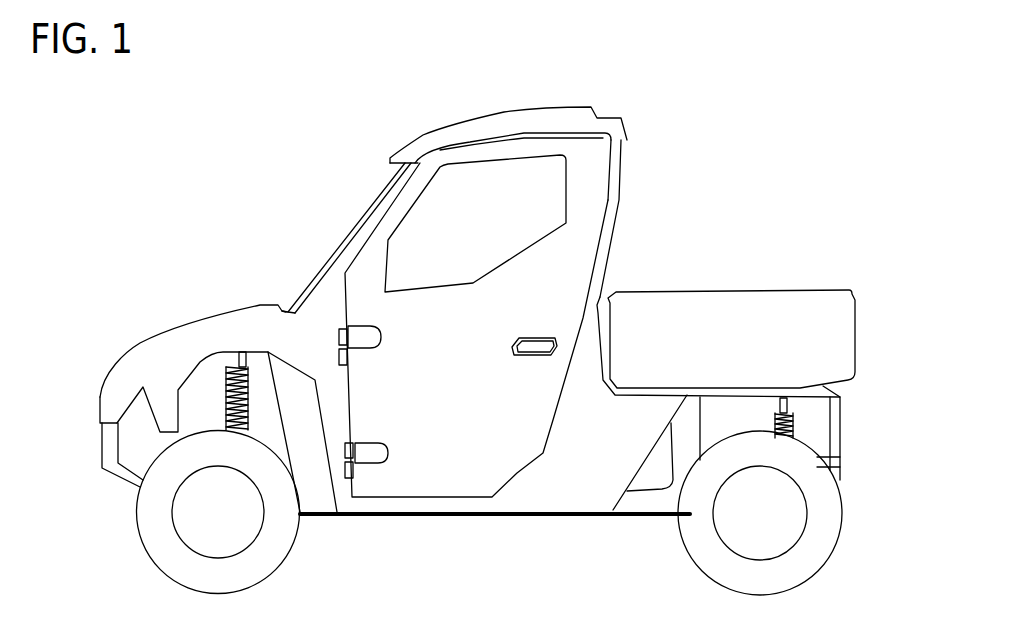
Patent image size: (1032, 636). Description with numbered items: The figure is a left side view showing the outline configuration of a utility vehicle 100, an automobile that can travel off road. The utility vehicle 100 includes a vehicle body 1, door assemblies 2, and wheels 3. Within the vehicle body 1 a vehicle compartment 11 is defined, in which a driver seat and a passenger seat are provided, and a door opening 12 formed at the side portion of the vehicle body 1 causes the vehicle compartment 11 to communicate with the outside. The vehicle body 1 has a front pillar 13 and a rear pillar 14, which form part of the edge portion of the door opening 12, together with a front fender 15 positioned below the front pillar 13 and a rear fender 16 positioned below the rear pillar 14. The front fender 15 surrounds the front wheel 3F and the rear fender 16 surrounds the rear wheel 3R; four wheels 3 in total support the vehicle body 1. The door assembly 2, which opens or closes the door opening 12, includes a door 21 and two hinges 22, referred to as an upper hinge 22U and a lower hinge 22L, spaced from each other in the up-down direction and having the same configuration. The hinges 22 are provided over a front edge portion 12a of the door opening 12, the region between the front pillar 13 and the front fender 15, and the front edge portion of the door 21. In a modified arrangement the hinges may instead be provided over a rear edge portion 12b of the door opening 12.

The utility vehicle 100 is at (257, 147).
The vehicle body 1 is at (523, 108).
The door assembly 2 is at (515, 478).
The wheels 3 is at (485, 524).
The front wheel 3F is at (148, 555).
The rear wheel 3R is at (820, 570).
The vehicle compartment 11 is at (423, 217).
The door opening 12 is at (605, 280).
The front edge portion of the door opening 12a is at (343, 393).
The rear edge portion of the door opening 12b is at (577, 420).
The front pillar 13 is at (352, 240).
The rear pillar 14 is at (614, 208).
The front fender 15 is at (285, 351).
The rear fender 16 is at (620, 447).
The door 21 is at (611, 177).
The hinges 22 is at (300, 395).
The upper hinge 22U is at (347, 323).
The lower hinge 22L is at (368, 465).